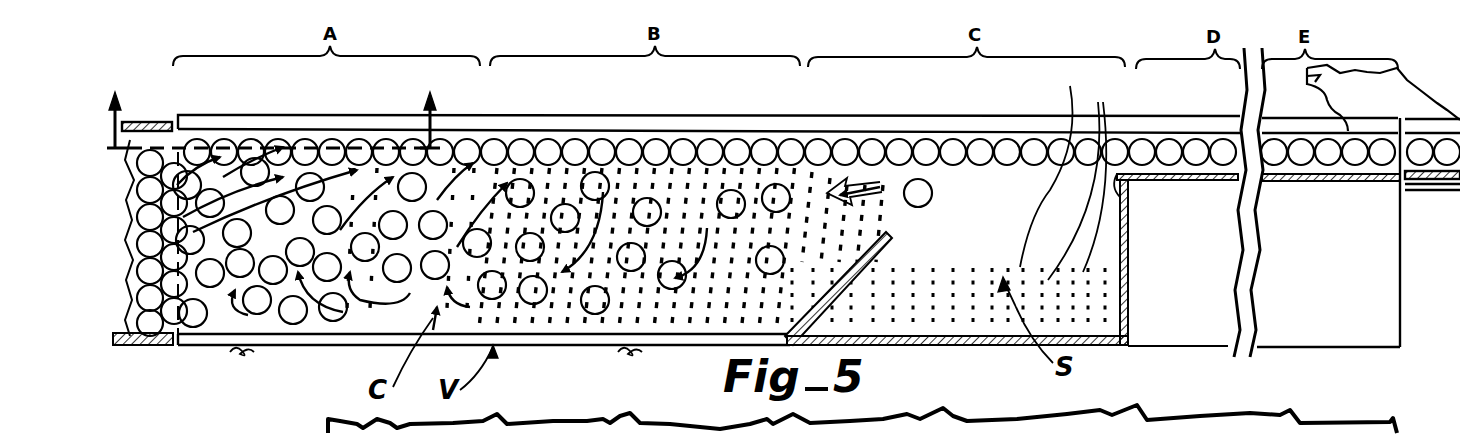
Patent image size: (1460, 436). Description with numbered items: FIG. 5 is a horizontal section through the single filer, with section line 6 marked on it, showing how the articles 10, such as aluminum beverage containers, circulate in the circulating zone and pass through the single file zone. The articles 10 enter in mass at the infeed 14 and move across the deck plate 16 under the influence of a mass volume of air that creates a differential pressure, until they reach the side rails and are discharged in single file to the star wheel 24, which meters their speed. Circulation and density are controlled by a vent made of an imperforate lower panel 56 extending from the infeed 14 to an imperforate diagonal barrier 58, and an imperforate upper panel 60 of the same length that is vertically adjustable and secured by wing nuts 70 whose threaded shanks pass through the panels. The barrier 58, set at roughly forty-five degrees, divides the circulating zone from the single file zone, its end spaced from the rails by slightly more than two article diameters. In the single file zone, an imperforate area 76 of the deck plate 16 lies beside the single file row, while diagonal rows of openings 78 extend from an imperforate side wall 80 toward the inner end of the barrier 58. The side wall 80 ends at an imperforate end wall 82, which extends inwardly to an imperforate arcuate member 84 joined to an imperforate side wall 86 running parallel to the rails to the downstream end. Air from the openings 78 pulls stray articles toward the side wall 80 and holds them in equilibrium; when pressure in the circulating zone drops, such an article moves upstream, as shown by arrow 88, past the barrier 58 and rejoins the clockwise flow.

The section line 6- 6 is at (272, 102).
The articles 10 is at (1053, 147).
The infeed 14 is at (167, 295).
The deck plate 16 is at (970, 310).
The star wheel 24 is at (1307, 82).
The lower panel 56 is at (577, 347).
The diagonal barrier 58 is at (780, 217).
The upper panel 60 is at (537, 347).
The wing nuts 70 is at (240, 350).
The imperforate area 76 is at (1046, 167).
The rows of openings 78 is at (1085, 178).
The side wall 80 is at (913, 347).
The end wall 82 is at (1128, 268).
The arcuate member 84 is at (1135, 197).
The side wall 86 is at (1278, 181).
The arrow 88 is at (868, 186).